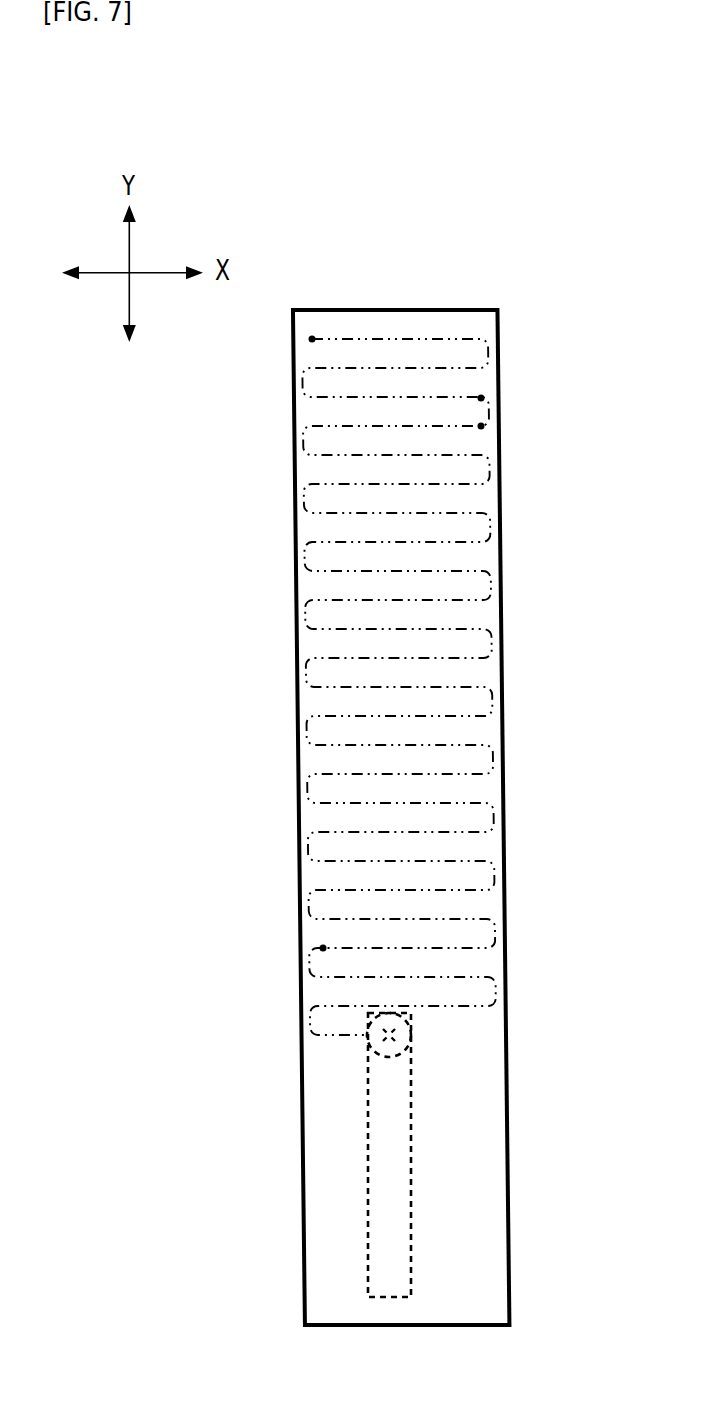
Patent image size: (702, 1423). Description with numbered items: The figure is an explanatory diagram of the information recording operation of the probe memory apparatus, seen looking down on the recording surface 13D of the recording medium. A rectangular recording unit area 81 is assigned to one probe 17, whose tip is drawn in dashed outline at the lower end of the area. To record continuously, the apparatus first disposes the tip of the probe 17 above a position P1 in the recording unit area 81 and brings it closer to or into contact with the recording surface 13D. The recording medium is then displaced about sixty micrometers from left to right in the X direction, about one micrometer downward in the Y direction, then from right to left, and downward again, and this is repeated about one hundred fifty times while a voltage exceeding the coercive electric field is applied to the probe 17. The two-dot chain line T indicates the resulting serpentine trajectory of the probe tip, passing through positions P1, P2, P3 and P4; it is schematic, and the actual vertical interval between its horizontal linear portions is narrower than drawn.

The recording surface 13D is at (554, 294).
The recording unit area 81 is at (503, 770).
The two-dot chain line T is at (397, 337).
The position P1 is at (312, 339).
The trace intermediate point P2 is at (481, 398).
The trace intermediate point P3 is at (481, 426).
The trace point P4 is at (323, 948).
The probe 17 is at (412, 1115).